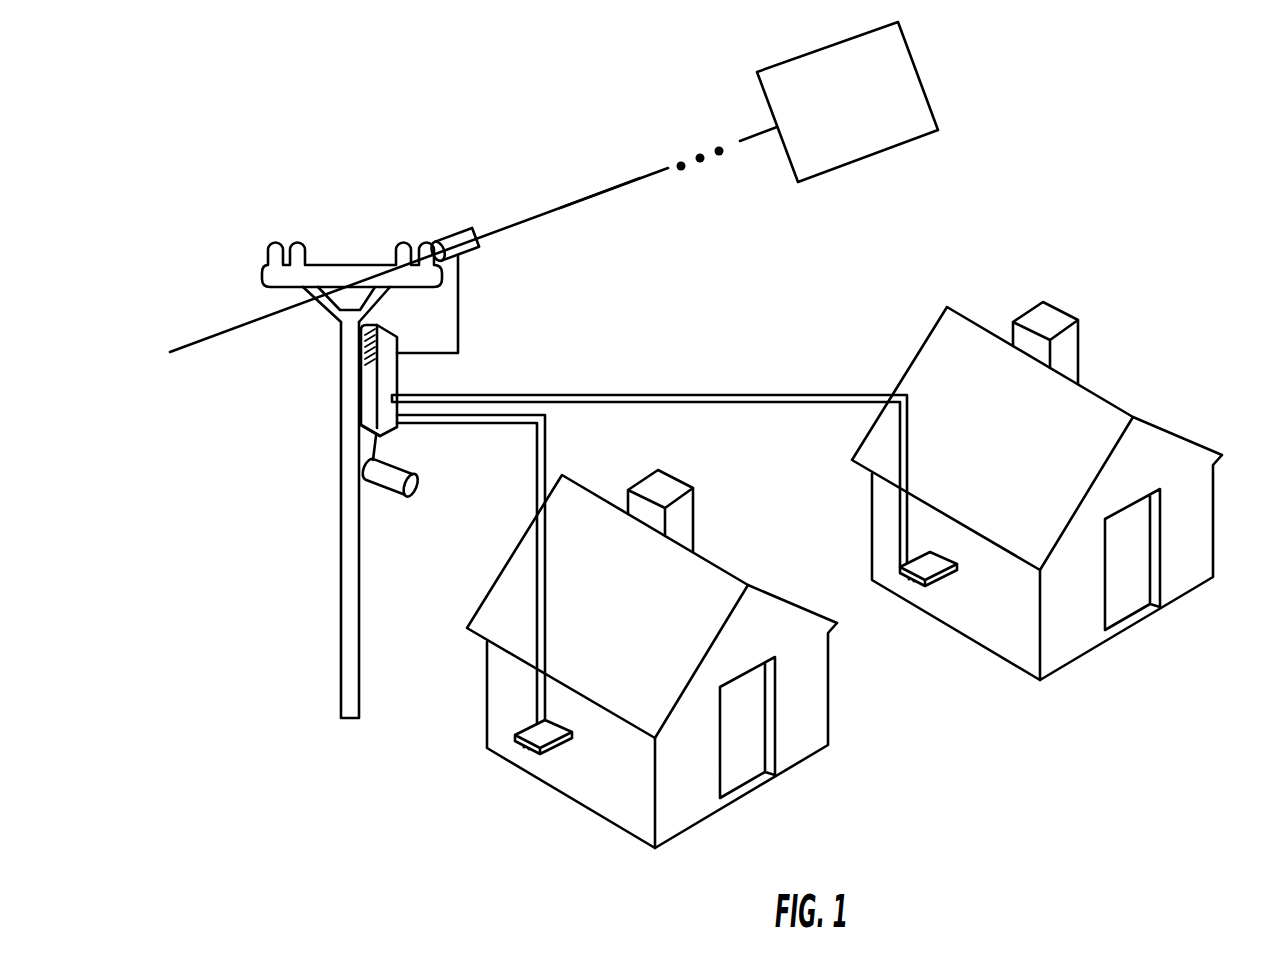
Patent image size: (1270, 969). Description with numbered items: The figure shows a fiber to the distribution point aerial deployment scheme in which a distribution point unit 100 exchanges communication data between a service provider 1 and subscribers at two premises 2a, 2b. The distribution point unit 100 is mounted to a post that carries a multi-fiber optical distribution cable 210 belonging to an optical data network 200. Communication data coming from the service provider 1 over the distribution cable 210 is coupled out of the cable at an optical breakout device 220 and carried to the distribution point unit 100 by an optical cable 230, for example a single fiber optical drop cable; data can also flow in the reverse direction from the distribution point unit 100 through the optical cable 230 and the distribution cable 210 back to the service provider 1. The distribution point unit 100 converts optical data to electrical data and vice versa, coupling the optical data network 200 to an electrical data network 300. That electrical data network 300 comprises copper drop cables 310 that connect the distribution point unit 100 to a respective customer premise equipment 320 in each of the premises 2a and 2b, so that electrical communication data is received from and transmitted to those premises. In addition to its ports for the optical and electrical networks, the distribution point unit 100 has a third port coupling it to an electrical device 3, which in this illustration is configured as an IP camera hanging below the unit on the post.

The service provider 1 is at (902, 107).
The optical data network 200 is at (558, 207).
The multi-fiber optical distribution cable 210 is at (591, 197).
The optical breakout device 220 is at (458, 232).
The optical cable 230 is at (458, 327).
The distribution point unit 100 is at (398, 377).
The electrical device 3 is at (418, 475).
The electrical data network 300 is at (660, 395).
The copper drop cables 310 is at (692, 403).
The subscriber premises 2a is at (1153, 417).
The subscriber premises 2b is at (828, 727).
The customer premise equipment 320 is at (537, 755).